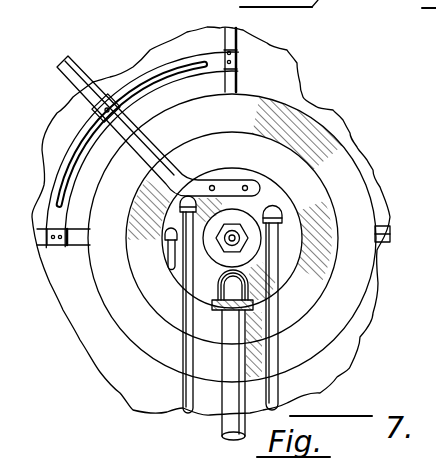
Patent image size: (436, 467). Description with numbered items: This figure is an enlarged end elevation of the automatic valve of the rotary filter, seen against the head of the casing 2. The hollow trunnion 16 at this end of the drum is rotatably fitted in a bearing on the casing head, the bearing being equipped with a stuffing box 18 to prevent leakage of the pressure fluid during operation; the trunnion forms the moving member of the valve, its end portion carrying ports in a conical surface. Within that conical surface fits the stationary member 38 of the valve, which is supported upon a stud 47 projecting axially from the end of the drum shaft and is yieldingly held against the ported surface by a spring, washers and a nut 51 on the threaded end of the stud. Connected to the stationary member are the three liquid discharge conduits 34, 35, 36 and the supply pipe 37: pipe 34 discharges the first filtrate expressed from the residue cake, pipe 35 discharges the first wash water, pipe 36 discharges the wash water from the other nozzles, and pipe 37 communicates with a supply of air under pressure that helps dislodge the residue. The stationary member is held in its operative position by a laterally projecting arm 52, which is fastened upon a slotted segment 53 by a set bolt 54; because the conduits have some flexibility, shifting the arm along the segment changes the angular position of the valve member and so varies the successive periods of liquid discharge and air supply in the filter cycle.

The casing 2 is at (298, 95).
The hollow trunnion 16 is at (335, 212).
The stuffing box 18 is at (377, 253).
The liquid discharge conduit 34 is at (222, 427).
The liquid discharge conduit 35 is at (279, 390).
The liquid discharge conduit 36 is at (184, 388).
The supply pipe 37 is at (217, 237).
The stationary member of the valve 38 is at (263, 185).
The stud 47 is at (223, 243).
The nut 51 is at (169, 250).
The laterally projecting arm 52 is at (63, 57).
The slotted segment 53 is at (143, 75).
The set bolt 54 is at (95, 110).